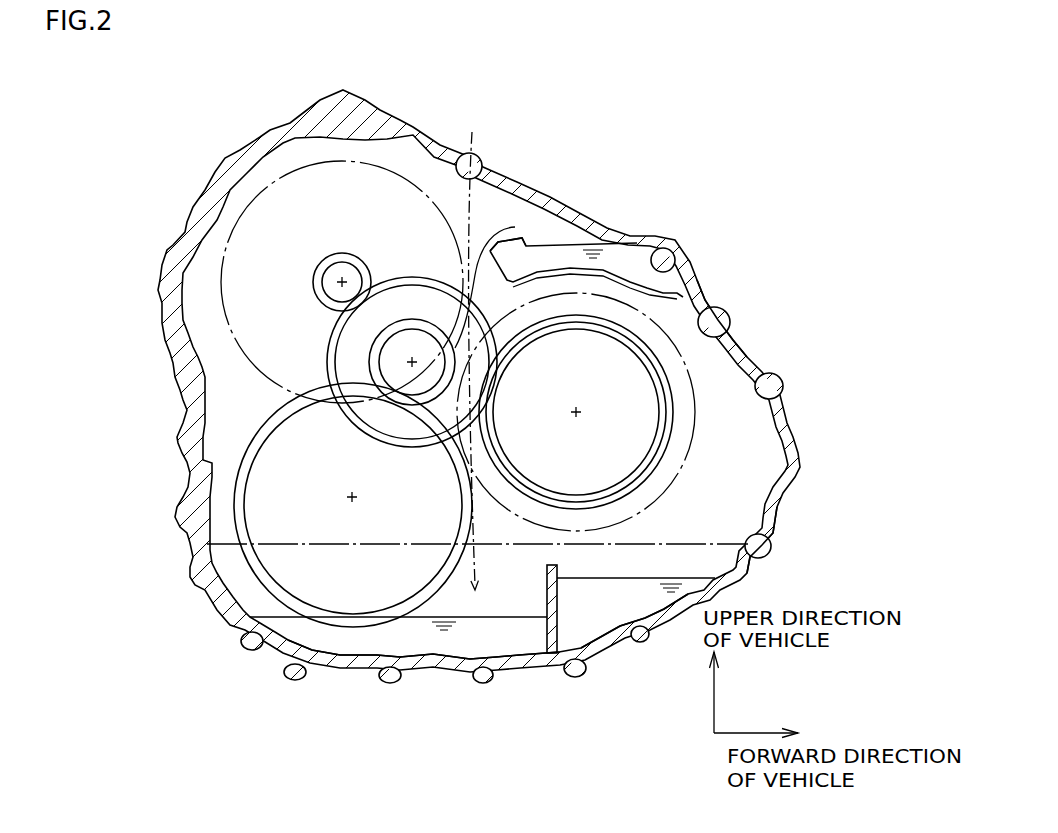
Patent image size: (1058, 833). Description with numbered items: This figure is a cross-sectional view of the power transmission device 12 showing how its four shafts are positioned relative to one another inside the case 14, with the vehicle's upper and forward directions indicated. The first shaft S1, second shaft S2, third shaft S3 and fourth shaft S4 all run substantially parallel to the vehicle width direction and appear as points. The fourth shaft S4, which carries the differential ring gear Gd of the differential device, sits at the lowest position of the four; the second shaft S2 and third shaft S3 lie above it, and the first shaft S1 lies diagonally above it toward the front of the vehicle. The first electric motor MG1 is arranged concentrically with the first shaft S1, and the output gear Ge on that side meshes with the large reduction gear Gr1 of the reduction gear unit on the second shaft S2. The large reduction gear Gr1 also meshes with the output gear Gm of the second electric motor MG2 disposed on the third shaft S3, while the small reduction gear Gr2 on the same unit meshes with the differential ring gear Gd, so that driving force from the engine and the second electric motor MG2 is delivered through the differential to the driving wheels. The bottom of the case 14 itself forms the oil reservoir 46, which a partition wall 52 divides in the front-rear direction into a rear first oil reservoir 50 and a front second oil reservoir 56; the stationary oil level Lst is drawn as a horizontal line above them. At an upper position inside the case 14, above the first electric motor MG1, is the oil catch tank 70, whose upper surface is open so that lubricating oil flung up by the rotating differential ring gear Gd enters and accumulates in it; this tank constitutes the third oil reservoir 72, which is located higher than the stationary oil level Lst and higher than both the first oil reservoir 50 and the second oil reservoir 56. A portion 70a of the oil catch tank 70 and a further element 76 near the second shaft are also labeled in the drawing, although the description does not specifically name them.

The power transmission device 12 is at (642, 120).
The case 14 is at (715, 320).
The oil reservoir 46 is at (720, 540).
The first oil reservoir 50 is at (351, 655).
The partition wall 52 is at (558, 632).
The second oil reservoir 56 is at (630, 620).
The oil catch tank 70 is at (680, 305).
The hook portion of oil receiving portion 70a is at (528, 237).
The third oil reservoir 72 is at (543, 253).
The oil guide plate 76 is at (495, 197).
The first electric motor MG1 is at (698, 413).
The second electric motor MG2 is at (262, 188).
The output gear Ge is at (622, 330).
The output gear of second electric motor Gm is at (313, 283).
The large reduction gear Gr1 is at (445, 292).
The small reduction gear Gr2 is at (377, 370).
The differential ring gear Gd is at (240, 480).
The first shaft S1 is at (576, 412).
The second shaft S2 is at (421, 352).
The third shaft S3 is at (342, 282).
The fourth shaft S4 is at (342, 486).
The stationary oil level Lst is at (477, 529).